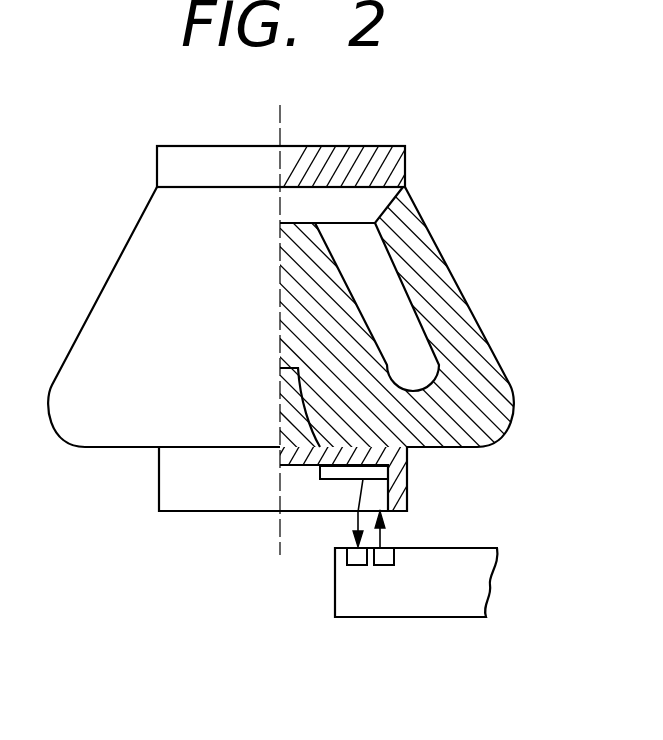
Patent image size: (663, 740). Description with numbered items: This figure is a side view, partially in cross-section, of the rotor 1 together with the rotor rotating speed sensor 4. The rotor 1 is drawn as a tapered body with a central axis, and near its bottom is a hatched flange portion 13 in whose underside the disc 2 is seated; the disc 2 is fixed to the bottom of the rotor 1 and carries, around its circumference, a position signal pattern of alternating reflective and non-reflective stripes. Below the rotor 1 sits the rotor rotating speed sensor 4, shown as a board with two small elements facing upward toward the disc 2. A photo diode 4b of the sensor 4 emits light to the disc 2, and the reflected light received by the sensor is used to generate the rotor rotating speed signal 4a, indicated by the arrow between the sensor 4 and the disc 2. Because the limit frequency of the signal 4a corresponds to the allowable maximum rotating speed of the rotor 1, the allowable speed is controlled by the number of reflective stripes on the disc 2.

The rotor 1 is at (445, 260).
The flange portion 13 is at (410, 489).
The disc 2 is at (327, 479).
The rotor rotating speed sensor 4 is at (458, 548).
The rotor rotating speed signal 4a is at (356, 565).
The photo diode 4b is at (384, 565).